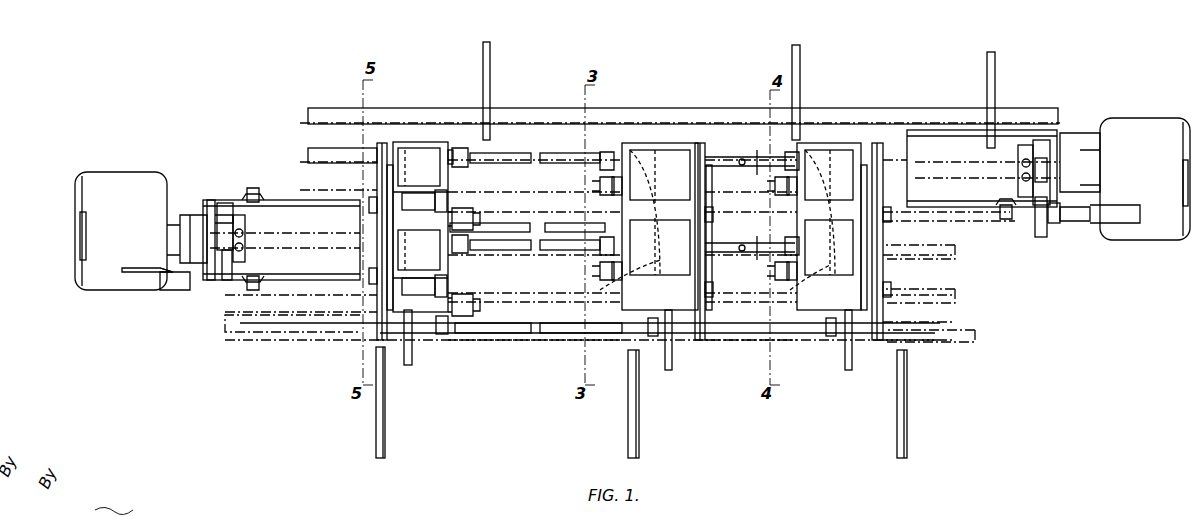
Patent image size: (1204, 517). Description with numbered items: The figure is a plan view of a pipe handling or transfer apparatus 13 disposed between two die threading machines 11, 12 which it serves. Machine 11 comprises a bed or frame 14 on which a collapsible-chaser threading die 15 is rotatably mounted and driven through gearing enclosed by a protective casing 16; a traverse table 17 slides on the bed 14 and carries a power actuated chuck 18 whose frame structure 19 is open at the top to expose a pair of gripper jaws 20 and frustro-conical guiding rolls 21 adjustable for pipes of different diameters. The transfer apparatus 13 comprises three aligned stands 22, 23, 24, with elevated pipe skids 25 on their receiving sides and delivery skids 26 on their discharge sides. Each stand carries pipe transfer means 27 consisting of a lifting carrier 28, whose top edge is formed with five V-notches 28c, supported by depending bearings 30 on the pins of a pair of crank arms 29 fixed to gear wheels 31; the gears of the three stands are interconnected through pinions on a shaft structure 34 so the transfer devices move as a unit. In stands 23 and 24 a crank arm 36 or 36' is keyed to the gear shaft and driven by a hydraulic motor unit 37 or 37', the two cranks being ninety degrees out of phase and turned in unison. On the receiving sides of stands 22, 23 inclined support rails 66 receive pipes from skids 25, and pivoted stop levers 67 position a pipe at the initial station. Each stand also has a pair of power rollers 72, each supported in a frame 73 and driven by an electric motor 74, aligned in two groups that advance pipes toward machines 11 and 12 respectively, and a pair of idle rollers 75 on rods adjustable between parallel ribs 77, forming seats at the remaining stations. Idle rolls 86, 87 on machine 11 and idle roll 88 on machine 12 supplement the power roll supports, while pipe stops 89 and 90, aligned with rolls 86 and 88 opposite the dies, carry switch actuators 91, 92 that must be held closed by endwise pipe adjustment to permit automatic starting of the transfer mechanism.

The die threading machine 11 is at (215, 164).
The die threading machine 12 is at (1074, 114).
The pipe handling or transfer apparatus 13 is at (698, 102).
The bed or frame 14 is at (284, 200).
The threading die 15 is at (185, 214).
The protective casing 16 is at (100, 184).
The traverse table 17 is at (240, 202).
The power actuated chuck 18 is at (225, 204).
The frame structure 19 is at (230, 290).
The gripper jaws 20 is at (216, 210).
The frustro-conical rolls 21 is at (246, 224).
The stand 22 is at (422, 142).
The stand 23 is at (662, 141).
The stand 24 is at (854, 141).
The pipe skids 25 is at (376, 448).
The delivery skids 26 is at (488, 52).
The pipe transfer means 27 is at (377, 142).
The lifting structure or carrier 28 is at (377, 327).
The V-notches 28c is at (373, 152).
The crank arms 29 is at (370, 175).
The depending bearings 30 is at (370, 220).
The gear wheels 31 is at (406, 170).
The shaft structure 34 is at (550, 220).
The crank arm 36 is at (612, 290).
The crank arm 36' is at (801, 284).
The hydraulic motor unit 37 is at (645, 181).
The hydraulic motor unit 37' is at (827, 178).
The support rails 66 is at (408, 367).
The stop levers 67 is at (446, 338).
The power rollers 72 is at (440, 195).
The frame 73 is at (448, 191).
The electric motor 74 is at (473, 204).
The idle rollers 75 is at (458, 148).
The parallel ribs 77 is at (452, 150).
The idle roll 86 is at (254, 294).
The idle roll 87 is at (254, 189).
The idle roll 88 is at (1006, 218).
The pipe stop device 89 is at (170, 285).
The stop 90 is at (1088, 224).
The actuator 91 is at (182, 288).
The actuator 92 is at (1060, 226).